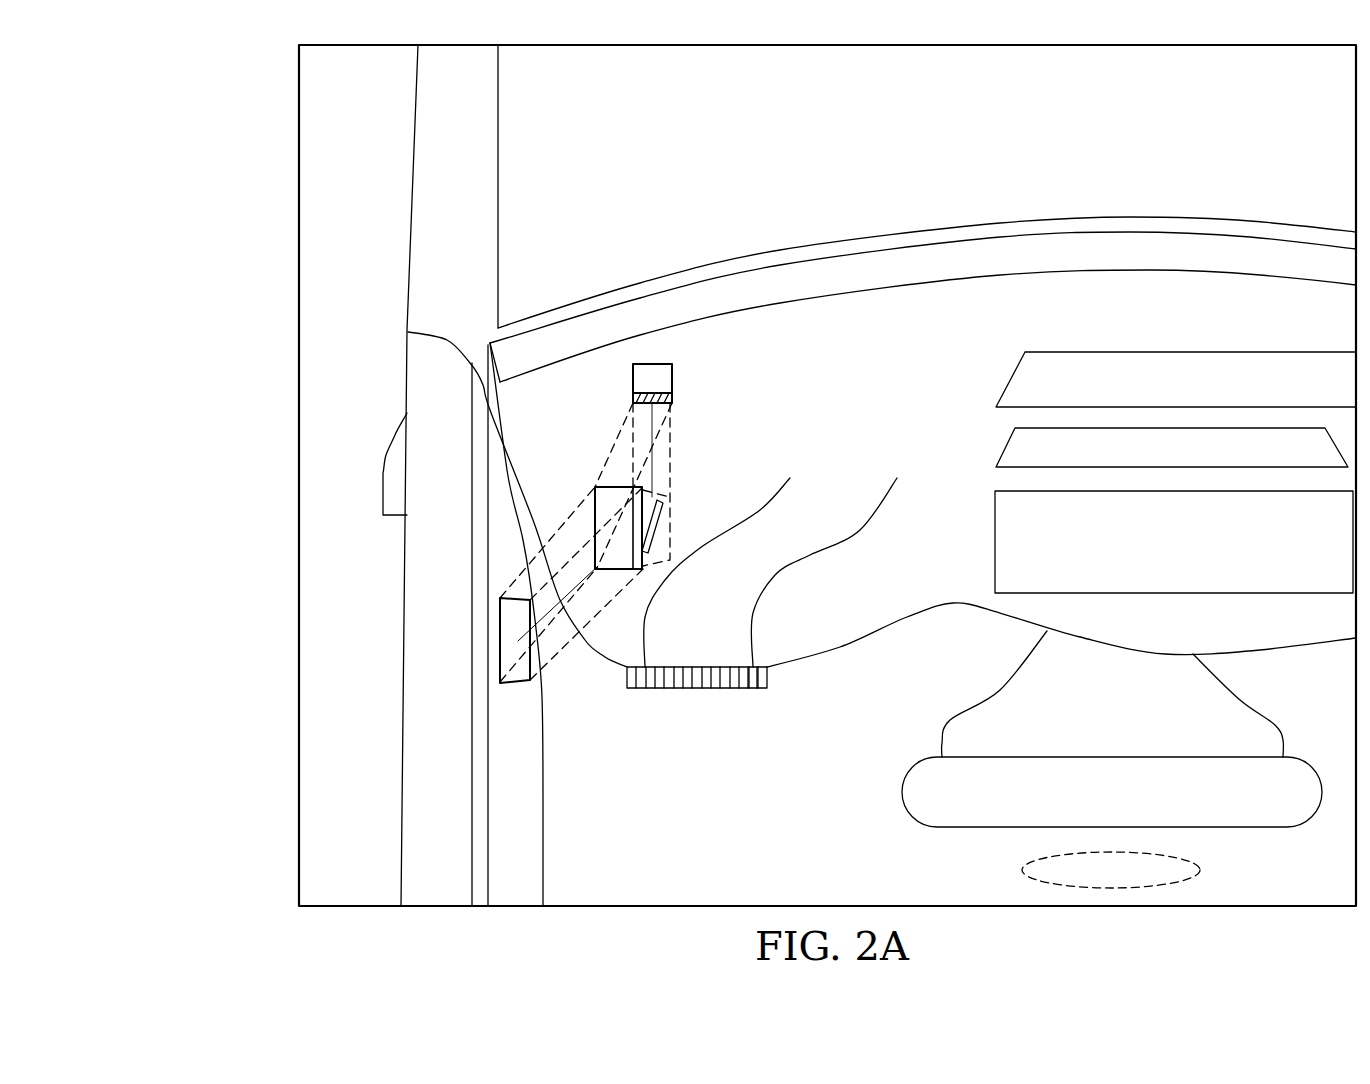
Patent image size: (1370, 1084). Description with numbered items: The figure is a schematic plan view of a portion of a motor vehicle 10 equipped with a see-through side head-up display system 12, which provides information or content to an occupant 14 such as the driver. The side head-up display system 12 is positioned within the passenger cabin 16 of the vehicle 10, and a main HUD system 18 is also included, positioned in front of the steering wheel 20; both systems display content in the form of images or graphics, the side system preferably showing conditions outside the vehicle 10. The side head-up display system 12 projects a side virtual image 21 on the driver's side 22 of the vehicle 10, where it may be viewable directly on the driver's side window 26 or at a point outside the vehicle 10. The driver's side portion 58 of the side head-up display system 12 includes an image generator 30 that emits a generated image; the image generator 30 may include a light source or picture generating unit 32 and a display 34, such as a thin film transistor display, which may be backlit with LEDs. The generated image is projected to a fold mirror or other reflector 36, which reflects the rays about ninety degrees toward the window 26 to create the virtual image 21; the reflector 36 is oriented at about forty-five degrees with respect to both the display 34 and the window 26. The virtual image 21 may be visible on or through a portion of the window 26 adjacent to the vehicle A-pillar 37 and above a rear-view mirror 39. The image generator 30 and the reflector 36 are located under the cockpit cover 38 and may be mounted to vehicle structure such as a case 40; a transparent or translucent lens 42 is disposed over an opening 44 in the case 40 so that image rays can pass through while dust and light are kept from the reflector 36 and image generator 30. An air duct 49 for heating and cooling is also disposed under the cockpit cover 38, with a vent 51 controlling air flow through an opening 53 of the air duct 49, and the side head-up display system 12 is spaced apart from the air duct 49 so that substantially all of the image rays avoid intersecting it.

The motor vehicle 10 is at (272, 187).
The side head-up display system 12 is at (598, 452).
The occupant 14 is at (1022, 870).
The passenger cabin 16 is at (518, 716).
The main HUD system 18 is at (995, 517).
The steering wheel 20 is at (905, 790).
The side virtual image 21 is at (500, 670).
The driver's side 22 is at (410, 537).
The driver's side window 26 is at (500, 565).
The image generator 30 is at (683, 362).
The picture generating unit 32 is at (672, 378).
The display 34 is at (632, 399).
The reflector 36 is at (662, 518).
The A-pillar 37 is at (477, 198).
The cockpit cover 38 is at (792, 637).
The rear-view mirror 39 is at (383, 472).
The case 40 is at (575, 373).
The lens 42 is at (603, 565).
The opening 44 is at (636, 570).
The air duct 49 is at (862, 527).
The vent 51 is at (753, 690).
The opening 53 is at (691, 668).
The driver's side portion 58 is at (683, 458).